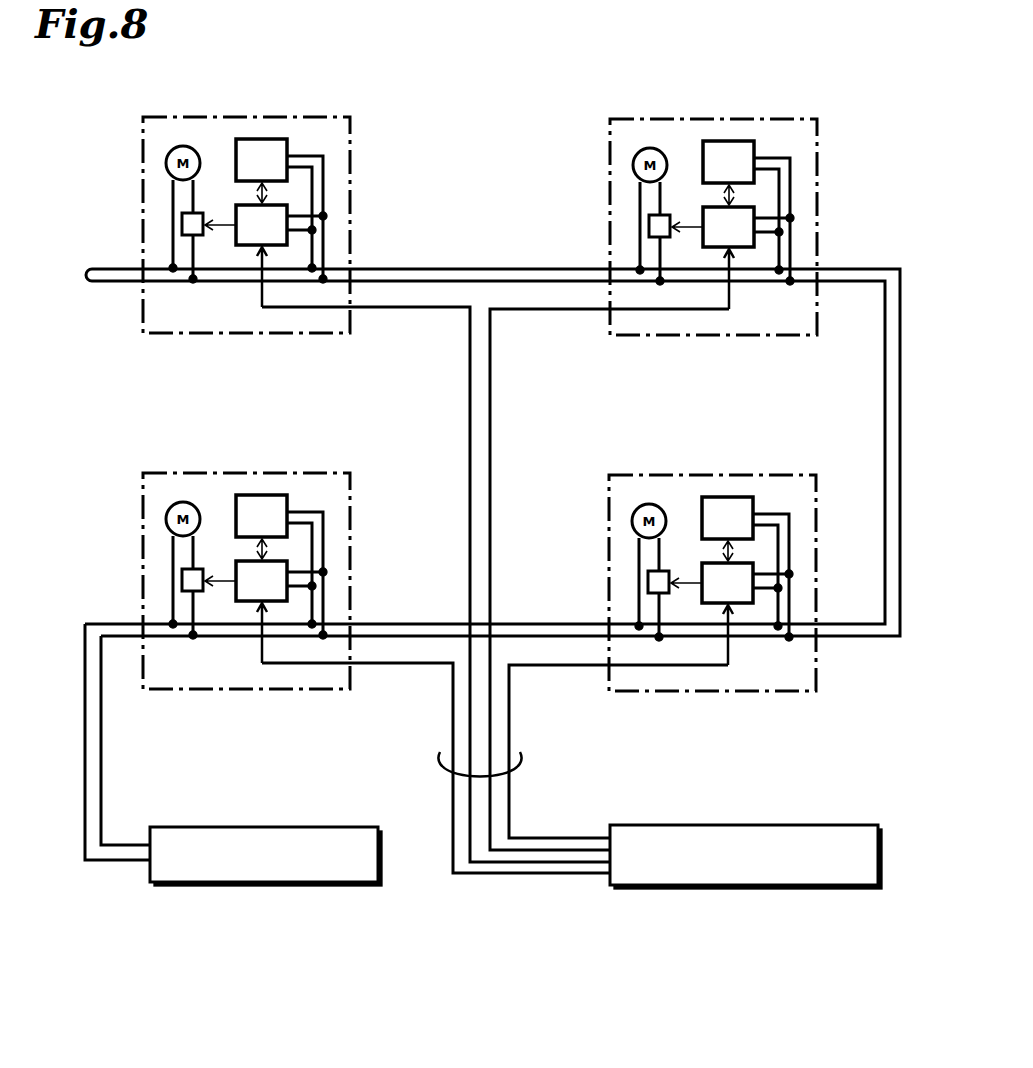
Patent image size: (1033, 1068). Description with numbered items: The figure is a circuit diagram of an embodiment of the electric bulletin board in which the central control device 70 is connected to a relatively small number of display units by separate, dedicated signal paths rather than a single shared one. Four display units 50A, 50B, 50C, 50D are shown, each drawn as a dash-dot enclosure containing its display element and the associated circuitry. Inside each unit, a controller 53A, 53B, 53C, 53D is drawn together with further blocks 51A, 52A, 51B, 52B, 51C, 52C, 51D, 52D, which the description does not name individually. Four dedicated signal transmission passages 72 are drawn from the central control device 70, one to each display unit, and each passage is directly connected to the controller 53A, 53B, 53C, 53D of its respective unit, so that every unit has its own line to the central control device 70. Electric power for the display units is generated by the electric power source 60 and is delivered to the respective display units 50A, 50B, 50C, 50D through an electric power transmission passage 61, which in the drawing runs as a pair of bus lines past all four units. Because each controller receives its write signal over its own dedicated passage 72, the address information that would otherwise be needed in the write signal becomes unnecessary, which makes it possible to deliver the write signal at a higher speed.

The display unit 50A is at (192, 115).
The motor driver A 51A is at (200, 213).
The communication section A 52A is at (277, 139).
The controller 53A is at (273, 245).
The display unit 50B is at (713, 197).
The motor driver B 51B is at (708, 161).
The communication section B 52B is at (755, 153).
The controller 53B is at (755, 291).
The display unit 50C is at (246, 551).
The motor driver C 51C is at (241, 515).
The communication section C 52C is at (288, 507).
The controller 53C is at (288, 645).
The display unit 50D is at (712, 553).
The motor driver D 51D is at (708, 517).
The communication section D 52D is at (755, 509).
The controller 53D is at (755, 647).
The electric power source 60 is at (235, 882).
The electric power transmission passage 61 is at (128, 847).
The central control device 70 is at (707, 885).
The signal transmission passages 72 is at (522, 764).